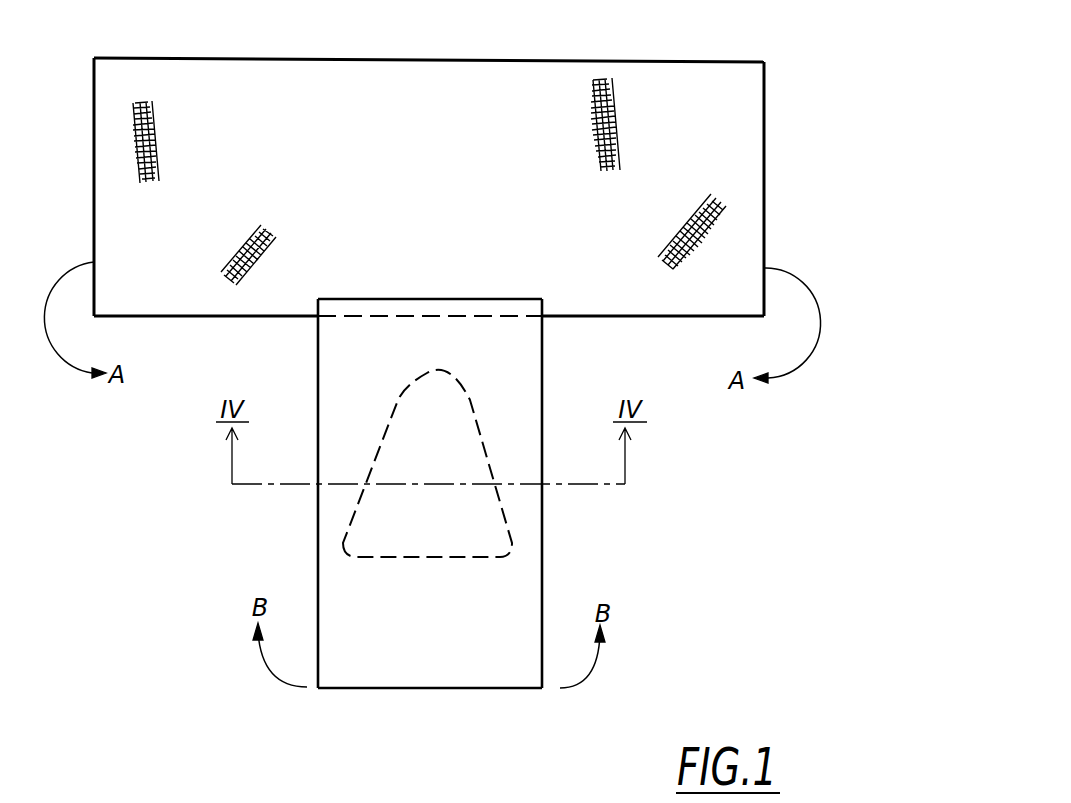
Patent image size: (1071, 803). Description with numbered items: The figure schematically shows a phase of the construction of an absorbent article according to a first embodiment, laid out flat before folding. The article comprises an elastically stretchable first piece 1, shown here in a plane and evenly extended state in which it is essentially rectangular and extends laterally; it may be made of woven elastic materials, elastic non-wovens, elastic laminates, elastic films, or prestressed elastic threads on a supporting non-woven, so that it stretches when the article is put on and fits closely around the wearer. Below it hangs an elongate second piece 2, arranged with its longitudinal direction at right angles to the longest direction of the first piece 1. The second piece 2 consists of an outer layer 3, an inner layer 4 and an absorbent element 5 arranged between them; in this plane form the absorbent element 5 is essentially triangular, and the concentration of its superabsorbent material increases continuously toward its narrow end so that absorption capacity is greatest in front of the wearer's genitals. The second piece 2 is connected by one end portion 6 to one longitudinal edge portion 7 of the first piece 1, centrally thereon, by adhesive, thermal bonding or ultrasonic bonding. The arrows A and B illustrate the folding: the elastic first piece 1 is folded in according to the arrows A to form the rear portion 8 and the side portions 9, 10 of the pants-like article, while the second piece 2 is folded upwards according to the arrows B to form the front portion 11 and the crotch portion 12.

The first piece 1 is at (654, 60).
The second piece 2 is at (475, 689).
The outer layer 3 is at (500, 597).
The inner layer 4 is at (363, 585).
The absorbent element 5 is at (473, 520).
The end portion 6 is at (523, 295).
The longitudinal edge portion 7 is at (193, 301).
The rear portion 8 is at (440, 80).
The side portion 9 is at (103, 170).
The side portion 10 is at (746, 168).
The front portion 11 is at (384, 669).
The crotch portion 12 is at (389, 330).